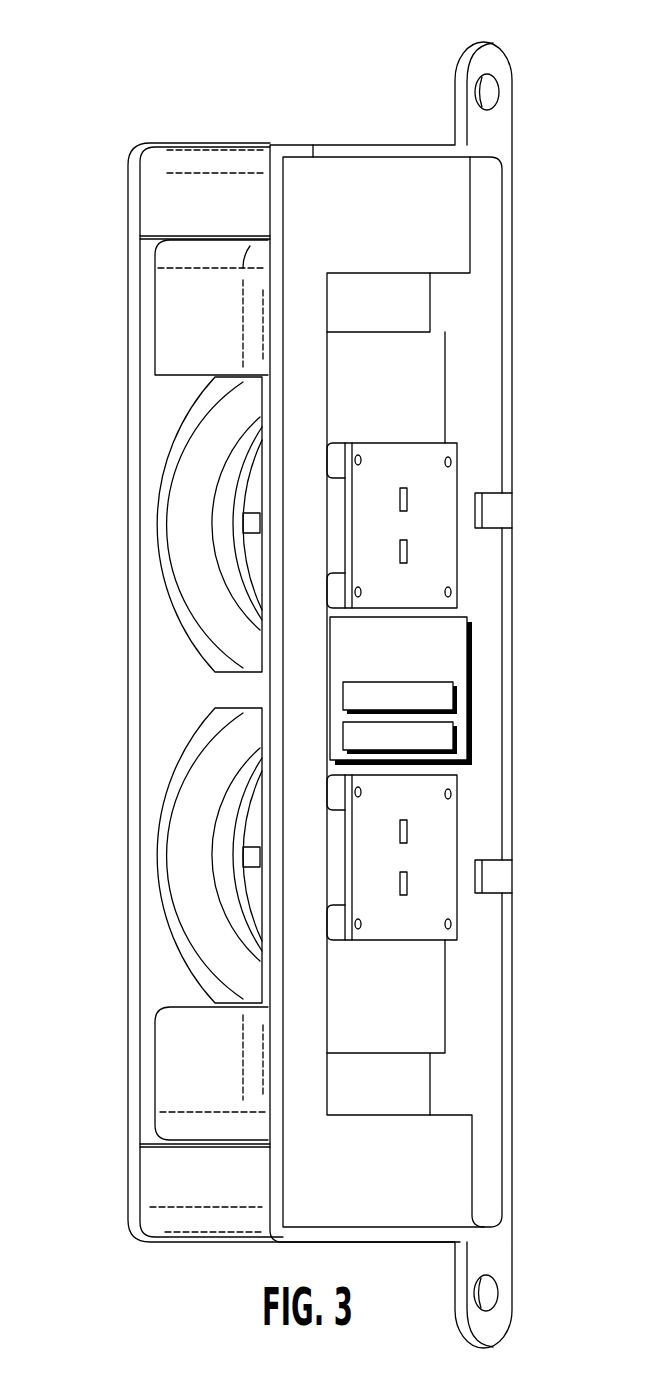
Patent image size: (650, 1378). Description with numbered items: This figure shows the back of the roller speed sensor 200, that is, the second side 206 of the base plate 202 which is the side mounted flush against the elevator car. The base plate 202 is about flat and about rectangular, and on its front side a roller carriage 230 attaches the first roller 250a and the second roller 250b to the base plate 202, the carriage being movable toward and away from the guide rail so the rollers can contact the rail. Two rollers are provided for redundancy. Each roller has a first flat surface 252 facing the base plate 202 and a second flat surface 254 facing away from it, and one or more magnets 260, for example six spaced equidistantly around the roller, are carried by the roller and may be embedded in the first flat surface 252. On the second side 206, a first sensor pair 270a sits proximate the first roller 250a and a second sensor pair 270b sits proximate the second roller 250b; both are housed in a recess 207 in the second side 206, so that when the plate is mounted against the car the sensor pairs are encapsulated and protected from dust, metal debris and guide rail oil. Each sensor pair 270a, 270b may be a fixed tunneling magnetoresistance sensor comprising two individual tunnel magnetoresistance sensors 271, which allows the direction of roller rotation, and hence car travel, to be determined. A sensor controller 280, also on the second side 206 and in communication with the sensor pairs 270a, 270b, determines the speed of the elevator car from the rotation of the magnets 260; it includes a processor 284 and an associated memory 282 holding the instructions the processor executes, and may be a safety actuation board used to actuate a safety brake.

The roller speed sensor 200 is at (134, 61).
The base plate 202 is at (283, 166).
The second side 206 is at (397, 1196).
The recess 207 is at (398, 1022).
The roller carriage 230 is at (170, 330).
The first roller 250a is at (185, 522).
The second roller 250b is at (180, 835).
The first flat surface 252 is at (245, 918).
The second flat surface 254 is at (158, 912).
The magnet 260 is at (245, 527).
The first sensor pair 270a is at (463, 493).
The second sensor pair 270b is at (423, 860).
The tunnel magnetoresistance sensor 271 is at (403, 488).
The sensor controller 280 is at (446, 690).
The memory 282 is at (457, 703).
The processor 284 is at (457, 737).